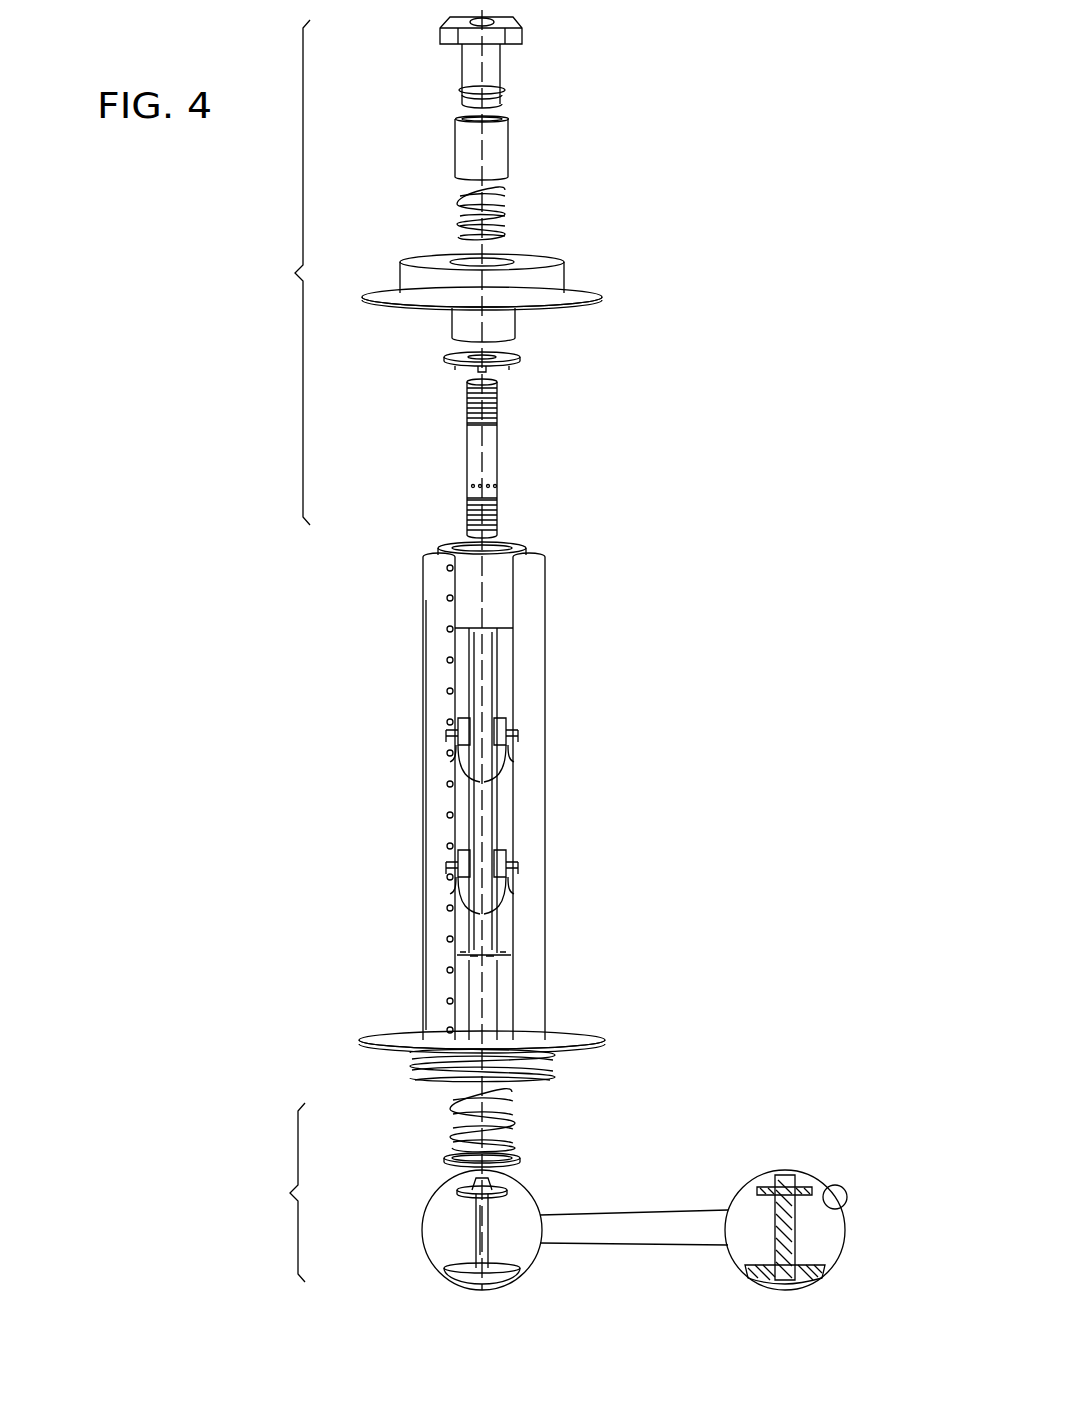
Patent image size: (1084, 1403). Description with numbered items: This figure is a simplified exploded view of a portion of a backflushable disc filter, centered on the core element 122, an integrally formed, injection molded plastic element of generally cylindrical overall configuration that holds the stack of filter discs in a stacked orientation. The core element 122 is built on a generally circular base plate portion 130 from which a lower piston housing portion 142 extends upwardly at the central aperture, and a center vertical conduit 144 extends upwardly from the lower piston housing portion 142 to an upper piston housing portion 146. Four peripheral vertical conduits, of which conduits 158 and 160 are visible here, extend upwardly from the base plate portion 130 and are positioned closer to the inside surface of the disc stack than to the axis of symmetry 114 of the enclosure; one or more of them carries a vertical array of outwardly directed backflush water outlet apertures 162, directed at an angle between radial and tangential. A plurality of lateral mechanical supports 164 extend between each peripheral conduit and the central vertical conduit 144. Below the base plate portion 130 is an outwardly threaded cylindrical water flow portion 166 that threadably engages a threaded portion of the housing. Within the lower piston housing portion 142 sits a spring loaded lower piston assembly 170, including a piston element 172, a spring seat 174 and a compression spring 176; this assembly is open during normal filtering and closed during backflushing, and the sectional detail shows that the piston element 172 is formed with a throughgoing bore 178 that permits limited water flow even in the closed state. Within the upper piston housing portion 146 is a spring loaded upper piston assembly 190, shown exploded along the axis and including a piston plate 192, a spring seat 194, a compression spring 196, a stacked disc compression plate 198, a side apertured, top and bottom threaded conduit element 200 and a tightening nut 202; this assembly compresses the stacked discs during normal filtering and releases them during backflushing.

The tightening nut 202 is at (500, 63).
The spring seat 194 is at (508, 157).
The compression spring 196 is at (508, 220).
The stacked disc compression plate 198 is at (600, 292).
The piston plate 192 is at (520, 356).
The side apertured, top and bottom threaded conduit element 200 is at (497, 478).
The upper piston assembly 190 is at (274, 272).
The core element 122 is at (545, 720).
The upper piston housing portion 146 is at (465, 578).
The peripheral vertical conduit 160 is at (532, 838).
The backflush water outlet apertures 162 is at (450, 845).
The center vertical conduit 144 is at (475, 683).
The lateral mechanical supports 164 is at (500, 780).
The axis of symmetry 114 is at (500, 990).
The peripheral vertical conduit 158 is at (428, 985).
The lower piston housing portion 142 is at (470, 1015).
The base plate portion 130 is at (595, 1038).
The outwardly threaded cylindrical water flow portion 166 is at (552, 1058).
The compression spring 176 is at (515, 1122).
The spring seat 174 is at (520, 1160).
The lower piston assembly 170 is at (269, 1192).
The piston element 172 is at (480, 1222).
The throughgoing bore 178 is at (790, 1226).